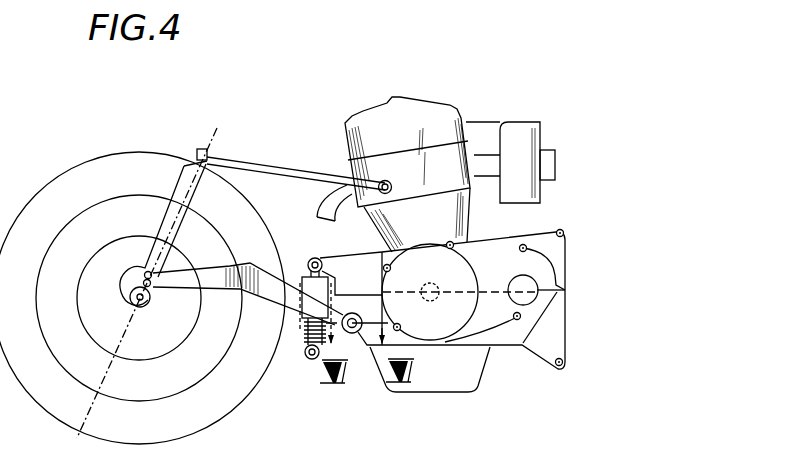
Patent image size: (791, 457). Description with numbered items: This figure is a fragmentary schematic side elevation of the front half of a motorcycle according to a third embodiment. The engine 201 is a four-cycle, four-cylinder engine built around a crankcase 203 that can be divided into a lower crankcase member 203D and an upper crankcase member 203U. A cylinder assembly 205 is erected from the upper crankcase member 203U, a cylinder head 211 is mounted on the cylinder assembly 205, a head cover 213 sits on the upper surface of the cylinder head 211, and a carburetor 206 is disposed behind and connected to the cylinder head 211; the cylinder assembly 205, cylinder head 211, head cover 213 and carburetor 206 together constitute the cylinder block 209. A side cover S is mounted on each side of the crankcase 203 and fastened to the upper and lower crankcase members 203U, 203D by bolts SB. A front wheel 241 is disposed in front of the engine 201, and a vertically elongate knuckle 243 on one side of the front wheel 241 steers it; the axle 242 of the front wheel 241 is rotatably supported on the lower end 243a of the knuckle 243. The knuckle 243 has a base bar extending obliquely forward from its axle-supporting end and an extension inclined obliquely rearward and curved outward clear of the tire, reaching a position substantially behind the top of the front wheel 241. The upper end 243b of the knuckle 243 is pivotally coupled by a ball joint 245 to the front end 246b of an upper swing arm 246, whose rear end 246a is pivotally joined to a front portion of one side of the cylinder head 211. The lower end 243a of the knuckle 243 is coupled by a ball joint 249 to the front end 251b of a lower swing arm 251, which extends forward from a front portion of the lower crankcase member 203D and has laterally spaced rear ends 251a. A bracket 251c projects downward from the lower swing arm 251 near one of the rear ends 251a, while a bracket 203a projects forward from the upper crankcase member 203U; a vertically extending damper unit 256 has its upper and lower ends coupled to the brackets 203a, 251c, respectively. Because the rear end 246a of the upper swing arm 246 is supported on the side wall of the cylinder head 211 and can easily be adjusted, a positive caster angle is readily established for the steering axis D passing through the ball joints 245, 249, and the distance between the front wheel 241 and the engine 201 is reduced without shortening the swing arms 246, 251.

The engine 201 is at (336, 138).
The crankcase 203 is at (472, 321).
The bracket 203a is at (329, 262).
The upper crankcase member 203U is at (556, 253).
The lower crankcase member 203D is at (538, 318).
The cylinder assembly 205 is at (527, 192).
The carburetor 206 is at (525, 160).
The cylinder block 209 is at (569, 142).
The cylinder head 211 is at (505, 141).
The head cover 213 is at (468, 113).
The front wheel 241 is at (122, 166).
The axle 242 is at (139, 306).
The knuckle 243 is at (190, 205).
The lower end of the knuckle 243a is at (145, 281).
The upper end of the knuckle 243b is at (193, 172).
The ball joint 245 is at (201, 150).
The upper swing arm 246 is at (312, 147).
The rear end of the upper swing arm 246a is at (385, 181).
The front end of the upper swing arm 246b is at (228, 163).
The ball joint 249 is at (152, 275).
The lower swing arm 251 is at (269, 356).
The rear ends of the lower swing arm 251a is at (356, 335).
The front end of the lower swing arm 251b is at (154, 288).
The bracket 251c is at (306, 346).
The damper unit 256 is at (301, 348).
The steering axis D is at (103, 368).
The side cover S is at (555, 272).
The bolts SB is at (521, 250).